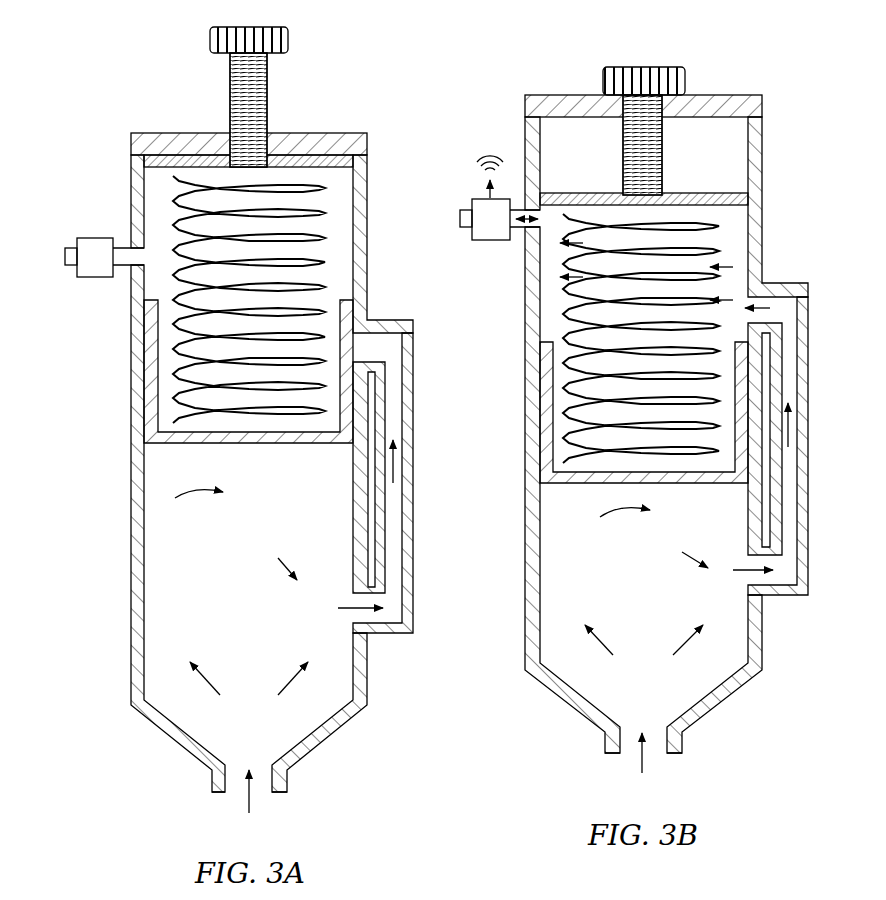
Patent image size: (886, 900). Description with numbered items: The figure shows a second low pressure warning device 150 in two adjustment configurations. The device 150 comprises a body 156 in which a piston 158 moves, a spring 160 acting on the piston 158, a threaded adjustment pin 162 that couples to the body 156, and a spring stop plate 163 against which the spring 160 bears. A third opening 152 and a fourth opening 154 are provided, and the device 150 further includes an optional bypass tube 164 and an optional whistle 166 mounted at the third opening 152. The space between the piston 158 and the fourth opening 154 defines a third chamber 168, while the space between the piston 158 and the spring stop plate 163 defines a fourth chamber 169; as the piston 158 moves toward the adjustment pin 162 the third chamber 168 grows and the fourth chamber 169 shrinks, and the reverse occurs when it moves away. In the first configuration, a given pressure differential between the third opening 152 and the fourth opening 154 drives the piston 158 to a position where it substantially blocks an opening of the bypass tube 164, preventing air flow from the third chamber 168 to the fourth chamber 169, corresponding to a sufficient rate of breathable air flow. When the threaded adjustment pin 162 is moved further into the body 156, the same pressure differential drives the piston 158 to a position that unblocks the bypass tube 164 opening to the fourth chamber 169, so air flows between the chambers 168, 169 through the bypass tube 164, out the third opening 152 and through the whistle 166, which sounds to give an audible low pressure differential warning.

In FIG. 3A, the second low pressure warning device 150 is at (155, 78).
In FIG. 3B, the second low pressure warning device 150 is at (560, 50).
In FIG. 3A, the third opening 152 is at (47, 242).
In FIG. 3B, the third opening 152 is at (461, 216).
In FIG. 3A, the fourth opening 154 is at (262, 780).
In FIG. 3B, the fourth opening 154 is at (653, 745).
In FIG. 3A, the body 156 is at (357, 267).
In FIG. 3B, the body 156 is at (762, 230).
In FIG. 3A, the piston 158 is at (150, 372).
In FIG. 3B, the piston 158 is at (540, 400).
In FIG. 3A, the spring 160 is at (307, 183).
In FIG. 3B, the spring 160 is at (553, 313).
In FIG. 3A, the threaded adjustment pin 162 is at (267, 91).
In FIG. 3B, the threaded adjustment pin 162 is at (662, 153).
In FIG. 3A, the spring stop plate 163 is at (353, 158).
In FIG. 3B, the spring stop plate 163 is at (685, 198).
In FIG. 3A, the bypass tube 164 is at (413, 345).
In FIG. 3B, the bypass tube 164 is at (783, 595).
In FIG. 3A, the whistle 166 is at (100, 277).
In FIG. 3B, the whistle 166 is at (493, 240).
In FIG. 3A, the third chamber 168 is at (200, 590).
In FIG. 3A, the fourth chamber 169 is at (162, 178).